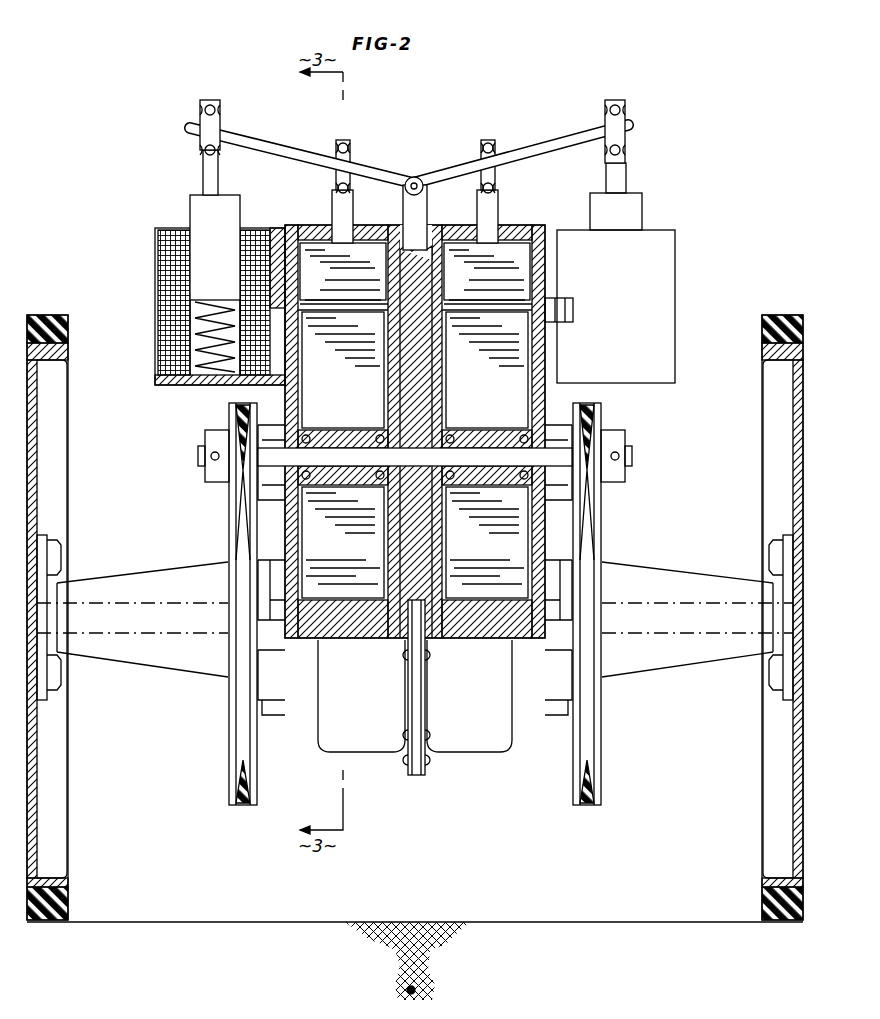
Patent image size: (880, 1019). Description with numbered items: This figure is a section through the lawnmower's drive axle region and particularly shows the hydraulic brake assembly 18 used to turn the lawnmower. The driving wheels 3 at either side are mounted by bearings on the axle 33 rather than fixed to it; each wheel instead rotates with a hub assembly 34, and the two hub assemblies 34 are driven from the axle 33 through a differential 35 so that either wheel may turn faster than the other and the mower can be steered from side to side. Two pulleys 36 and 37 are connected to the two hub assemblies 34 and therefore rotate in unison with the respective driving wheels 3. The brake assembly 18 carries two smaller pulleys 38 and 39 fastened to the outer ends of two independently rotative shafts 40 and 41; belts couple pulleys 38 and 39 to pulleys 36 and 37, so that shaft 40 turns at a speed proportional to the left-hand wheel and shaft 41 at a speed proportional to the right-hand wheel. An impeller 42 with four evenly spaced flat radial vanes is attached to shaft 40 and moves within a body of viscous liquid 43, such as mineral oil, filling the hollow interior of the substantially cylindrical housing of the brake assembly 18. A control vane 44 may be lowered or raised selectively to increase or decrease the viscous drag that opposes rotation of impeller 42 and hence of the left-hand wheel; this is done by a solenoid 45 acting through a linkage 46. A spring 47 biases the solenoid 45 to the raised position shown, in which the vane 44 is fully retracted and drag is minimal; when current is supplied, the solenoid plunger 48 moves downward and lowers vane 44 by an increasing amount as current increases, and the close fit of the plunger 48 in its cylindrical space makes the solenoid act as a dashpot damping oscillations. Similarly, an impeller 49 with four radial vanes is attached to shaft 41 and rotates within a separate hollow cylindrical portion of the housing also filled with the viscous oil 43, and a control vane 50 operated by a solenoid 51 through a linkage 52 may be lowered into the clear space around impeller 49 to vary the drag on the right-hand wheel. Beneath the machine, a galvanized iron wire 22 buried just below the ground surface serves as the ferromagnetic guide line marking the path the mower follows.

The driving wheel 3 is at (68, 855).
The brake assembly 18 is at (440, 638).
The galvanized iron wire 22 is at (407, 990).
The axle 33 is at (120, 605).
The hub assembly 34 is at (148, 664).
The differential 35 is at (457, 745).
The pulley 36 is at (229, 798).
The pulley 37 is at (601, 748).
The smaller pulley 38 is at (218, 485).
The smaller pulley 39 is at (607, 432).
The shaft 40 is at (332, 466).
The shaft 41 is at (490, 448).
The impeller 42 is at (340, 398).
The viscous liquid 43 is at (356, 598).
The control vane 44 is at (304, 243).
The solenoid 45 is at (158, 232).
The linkage 46 is at (278, 145).
The spring 47 is at (195, 332).
The solenoid plunger 48 is at (190, 200).
The impeller 49 is at (480, 398).
The control vane 50 is at (510, 243).
The solenoid 51 is at (660, 230).
The linkage 52 is at (545, 144).